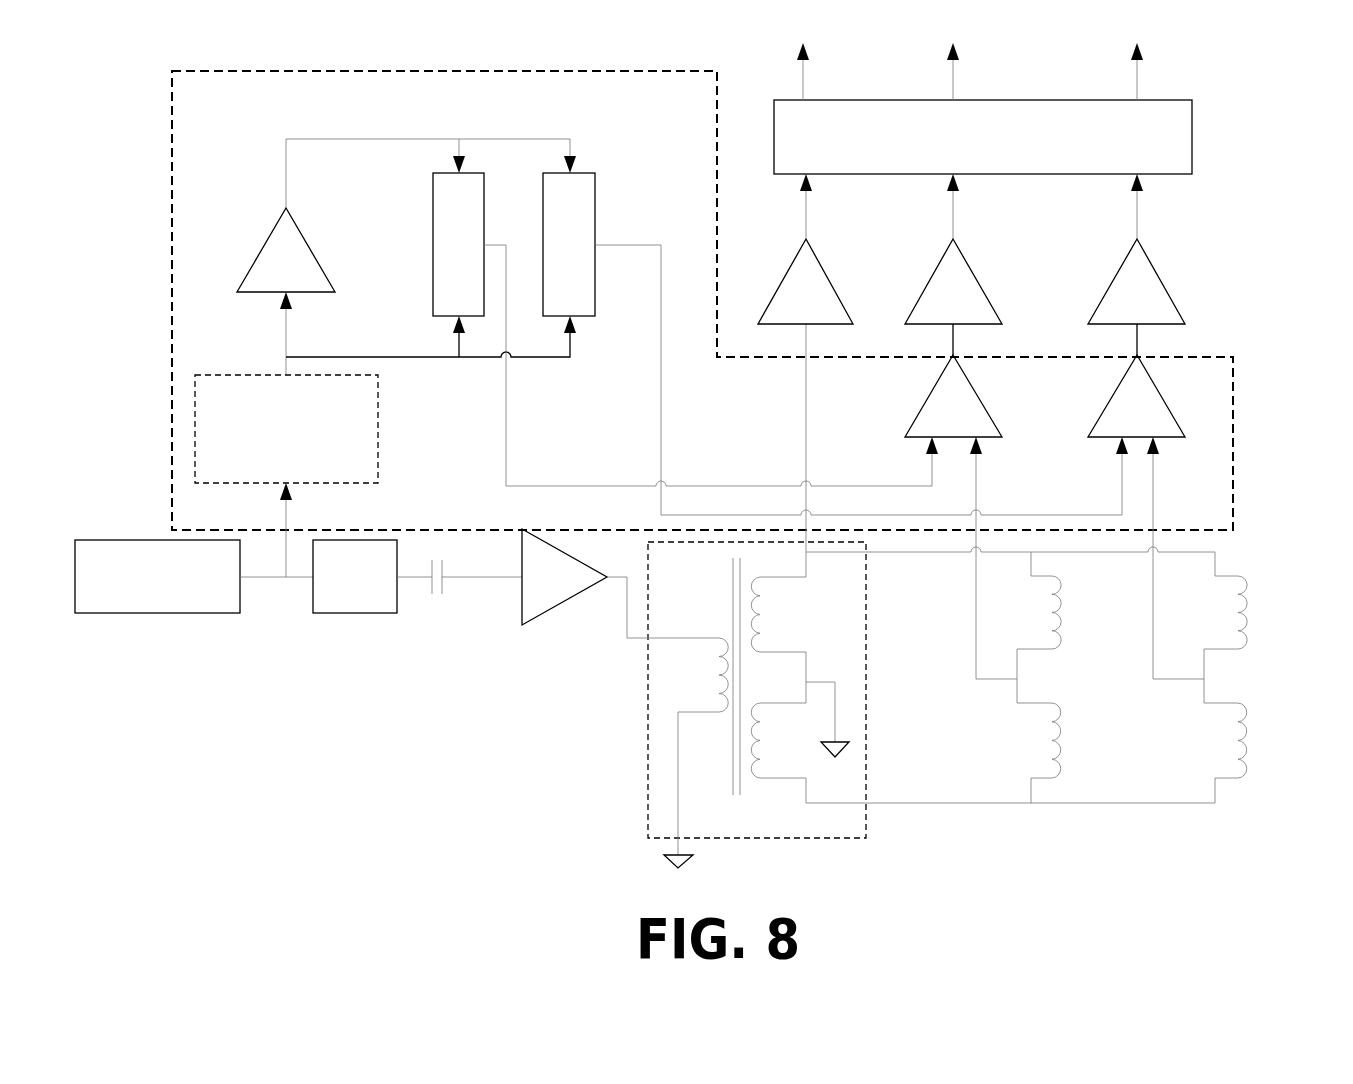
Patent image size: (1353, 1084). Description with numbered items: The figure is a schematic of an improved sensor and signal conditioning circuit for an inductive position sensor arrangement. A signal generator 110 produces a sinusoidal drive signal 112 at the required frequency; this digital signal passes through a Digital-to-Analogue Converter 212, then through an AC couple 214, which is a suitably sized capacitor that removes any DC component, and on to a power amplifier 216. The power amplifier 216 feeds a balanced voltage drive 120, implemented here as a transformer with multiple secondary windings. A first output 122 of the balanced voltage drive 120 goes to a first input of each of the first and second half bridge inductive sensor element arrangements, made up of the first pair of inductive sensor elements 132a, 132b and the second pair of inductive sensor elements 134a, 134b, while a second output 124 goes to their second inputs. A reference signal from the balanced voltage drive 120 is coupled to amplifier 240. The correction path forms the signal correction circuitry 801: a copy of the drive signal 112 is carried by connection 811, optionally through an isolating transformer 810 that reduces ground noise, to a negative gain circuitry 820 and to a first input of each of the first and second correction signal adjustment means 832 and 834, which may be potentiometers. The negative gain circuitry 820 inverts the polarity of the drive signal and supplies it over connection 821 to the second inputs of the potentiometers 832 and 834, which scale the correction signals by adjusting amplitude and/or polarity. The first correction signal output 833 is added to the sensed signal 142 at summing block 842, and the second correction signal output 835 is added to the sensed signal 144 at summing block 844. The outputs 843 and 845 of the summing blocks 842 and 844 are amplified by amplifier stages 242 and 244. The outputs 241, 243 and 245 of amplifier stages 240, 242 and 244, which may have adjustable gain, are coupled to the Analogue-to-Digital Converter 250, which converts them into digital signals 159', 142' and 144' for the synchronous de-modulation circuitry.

The signal correction circuitry 801 is at (172, 140).
The negative gain circuitry 820 is at (270, 232).
The connection 821 is at (360, 139).
The first correction signal adjustment means 832 is at (458, 244).
The second correction signal adjustment means 834 is at (569, 244).
The connection 811 is at (412, 359).
The first correction signal output 833 is at (508, 440).
The second correction signal output 835 is at (663, 380).
The transformer 810 is at (286, 476).
The signal generator 110 is at (157, 576).
The sinusoidal drive signal 112 is at (258, 578).
The Digital-to-Analogue Converter 212 is at (355, 576).
The AC couple 214 is at (440, 600).
The power amplifier 216 is at (564, 577).
The balanced voltage drive 120 is at (820, 838).
The first output 122 is at (888, 553).
The second output 124 is at (910, 803).
The sensed signal 142 is at (966, 558).
The sensed signal 144 is at (1149, 558).
The inductive sensor element 132a is at (1073, 629).
The inductive sensor element 132b is at (1073, 759).
The inductive sensor element 134a is at (1260, 629).
The inductive sensor element 134b is at (1260, 759).
The amplifier 240 is at (805, 281).
The amplifier 242 is at (953, 281).
The amplifier 244 is at (1136, 281).
The output 241 is at (821, 206).
The output 243 is at (969, 206).
The output 245 is at (1152, 206).
The Analogue-to-Digital Converter 250 is at (983, 137).
The digital signal 159' is at (782, 71).
The digital signal 142' is at (973, 71).
The digital signal 144' is at (1158, 71).
The summing block 842 is at (918, 408).
The summing block 844 is at (1100, 412).
The output 843 is at (972, 339).
The output 845 is at (1155, 339).